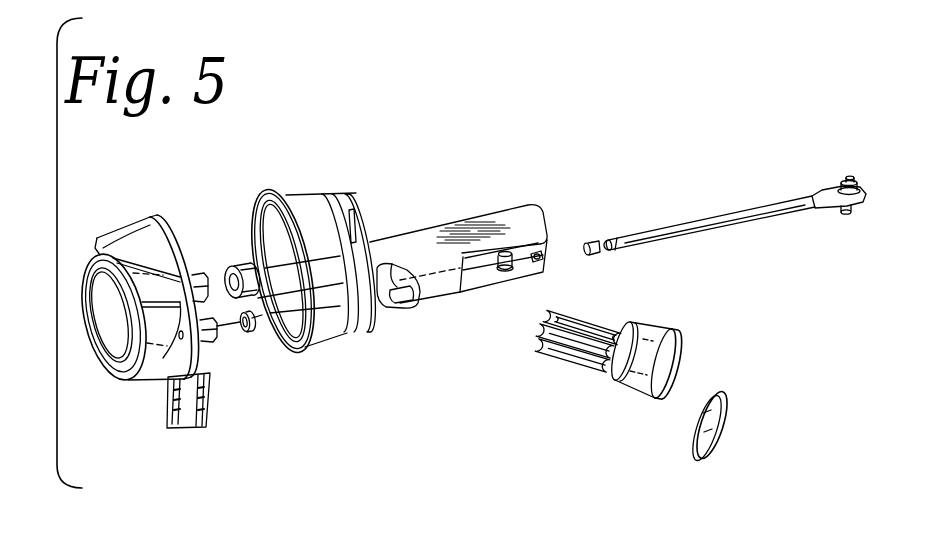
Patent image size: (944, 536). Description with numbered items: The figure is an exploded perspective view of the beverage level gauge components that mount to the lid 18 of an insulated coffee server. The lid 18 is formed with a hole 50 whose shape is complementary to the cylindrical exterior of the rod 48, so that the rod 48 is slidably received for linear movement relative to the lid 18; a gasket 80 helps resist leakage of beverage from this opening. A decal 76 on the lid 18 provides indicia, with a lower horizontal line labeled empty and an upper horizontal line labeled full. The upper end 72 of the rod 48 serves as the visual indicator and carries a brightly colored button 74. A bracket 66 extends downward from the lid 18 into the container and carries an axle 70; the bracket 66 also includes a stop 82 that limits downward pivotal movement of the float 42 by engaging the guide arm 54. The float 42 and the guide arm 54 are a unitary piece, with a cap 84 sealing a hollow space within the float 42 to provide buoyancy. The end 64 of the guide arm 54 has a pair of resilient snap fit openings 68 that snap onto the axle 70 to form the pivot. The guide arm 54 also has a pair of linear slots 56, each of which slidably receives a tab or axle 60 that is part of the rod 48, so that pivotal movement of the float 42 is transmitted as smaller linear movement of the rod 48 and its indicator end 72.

The lid 18 is at (268, 188).
The float 42 is at (663, 404).
The rod 48 is at (693, 223).
The hole 50 is at (180, 337).
The guide arm 54 is at (606, 362).
The linear slots 56 is at (598, 321).
The tab or axle 60 is at (850, 176).
The end of the guide arm 64 is at (545, 297).
The bracket 66 is at (417, 241).
The snap fit openings 68 is at (480, 331).
The axle 70 is at (512, 252).
The end of the rod 72 is at (613, 237).
The button 74 is at (585, 247).
The decal 76 is at (173, 397).
The gasket 80 is at (250, 330).
The stop 82 is at (541, 252).
The cap 84 is at (683, 358).